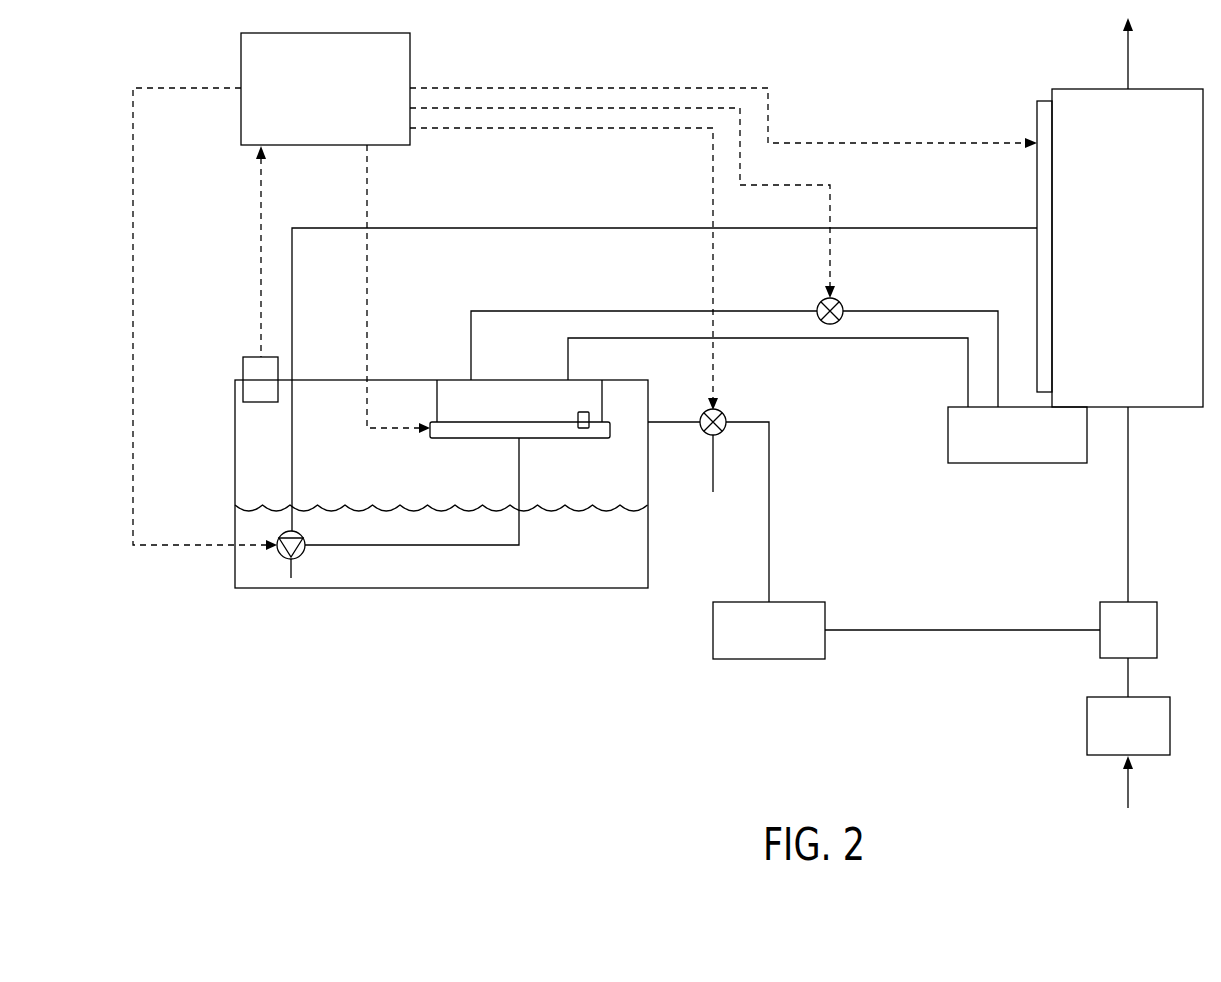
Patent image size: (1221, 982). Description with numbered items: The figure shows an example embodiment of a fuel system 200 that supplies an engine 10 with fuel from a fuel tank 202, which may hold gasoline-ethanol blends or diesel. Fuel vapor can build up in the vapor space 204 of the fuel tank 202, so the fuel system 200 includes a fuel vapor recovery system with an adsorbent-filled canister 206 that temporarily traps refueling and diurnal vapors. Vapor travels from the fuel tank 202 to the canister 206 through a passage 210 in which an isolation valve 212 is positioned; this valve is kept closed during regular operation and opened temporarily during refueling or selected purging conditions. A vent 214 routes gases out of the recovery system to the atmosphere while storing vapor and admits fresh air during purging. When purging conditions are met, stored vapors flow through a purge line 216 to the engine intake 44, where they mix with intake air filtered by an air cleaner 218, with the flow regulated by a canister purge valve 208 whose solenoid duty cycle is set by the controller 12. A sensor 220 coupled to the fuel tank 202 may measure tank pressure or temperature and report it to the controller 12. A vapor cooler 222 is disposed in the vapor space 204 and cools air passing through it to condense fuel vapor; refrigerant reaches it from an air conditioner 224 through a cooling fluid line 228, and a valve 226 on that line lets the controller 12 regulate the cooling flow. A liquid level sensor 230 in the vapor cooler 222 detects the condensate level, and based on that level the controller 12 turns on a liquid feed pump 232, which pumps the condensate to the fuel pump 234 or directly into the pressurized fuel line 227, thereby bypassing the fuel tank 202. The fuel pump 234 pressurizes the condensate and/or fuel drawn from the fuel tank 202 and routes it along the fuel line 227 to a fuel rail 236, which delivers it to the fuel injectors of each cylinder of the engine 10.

The fuel system 200 is at (806, 82).
The controller 12 is at (315, 113).
The engine 10 is at (1118, 271).
The fuel rail 236 is at (1037, 205).
The pressurized fuel line 227 is at (862, 228).
The cooling fluid line 228 is at (740, 311).
The valve 226 is at (842, 302).
The air conditioner 224 is at (1052, 446).
The isolation valve 212 is at (724, 413).
The vent 214 is at (716, 470).
The passage 210 is at (770, 530).
The canister 206 is at (754, 641).
The purge line 216 is at (943, 630).
The engine intake 44 is at (1130, 528).
The canister purge valve 208 is at (1113, 641).
The air cleaner 218 is at (1113, 738).
The fuel tank 202 is at (235, 482).
The vapor space 204 is at (437, 481).
The sensor 220 is at (243, 366).
The fuel pump 234 is at (299, 532).
The vapor cooler 222 is at (535, 413).
The liquid feed pump 232 is at (548, 440).
The liquid level sensor 230 is at (583, 412).